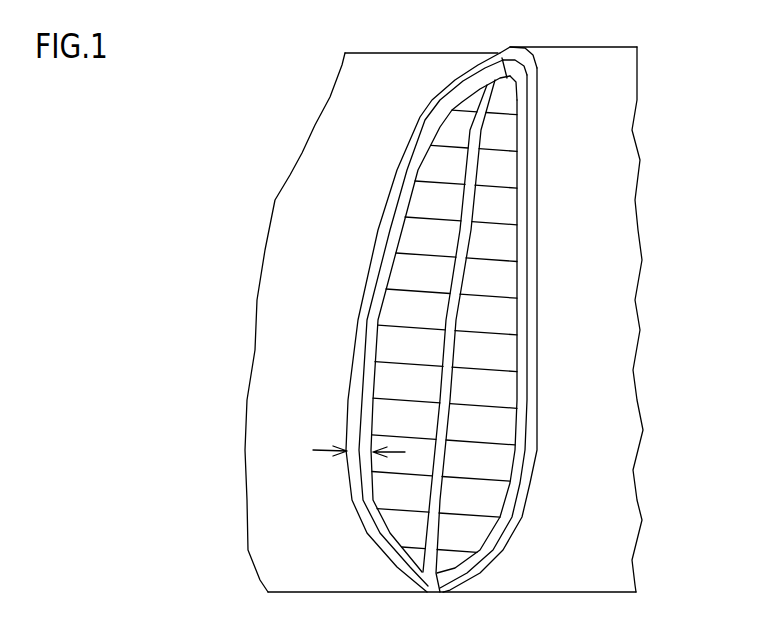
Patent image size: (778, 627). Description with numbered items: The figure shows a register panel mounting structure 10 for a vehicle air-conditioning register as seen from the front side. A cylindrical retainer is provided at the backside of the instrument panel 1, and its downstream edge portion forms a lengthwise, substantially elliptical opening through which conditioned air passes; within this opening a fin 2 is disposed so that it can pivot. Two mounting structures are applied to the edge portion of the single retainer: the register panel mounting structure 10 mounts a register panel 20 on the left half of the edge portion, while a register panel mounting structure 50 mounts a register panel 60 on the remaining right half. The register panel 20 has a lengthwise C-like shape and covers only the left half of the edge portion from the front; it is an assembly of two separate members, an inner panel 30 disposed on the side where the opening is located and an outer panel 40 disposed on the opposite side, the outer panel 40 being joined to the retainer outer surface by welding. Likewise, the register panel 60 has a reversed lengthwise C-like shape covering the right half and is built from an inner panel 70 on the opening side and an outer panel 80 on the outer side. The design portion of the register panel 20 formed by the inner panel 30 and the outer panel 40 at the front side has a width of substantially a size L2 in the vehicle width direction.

The instrument panel 1 is at (327, 210).
The fin 2 is at (435, 270).
The register panel mounting structure 10 is at (448, 319).
The register panel 20 is at (334, 322).
The inner panel 30 is at (373, 345).
The outer panel 40 is at (357, 386).
The register panel mounting structure 50 is at (587, 330).
The register panel 60 is at (587, 330).
The inner panel 70 is at (520, 328).
The outer panel 80 is at (535, 362).
The width of design portion L2 is at (325, 452).